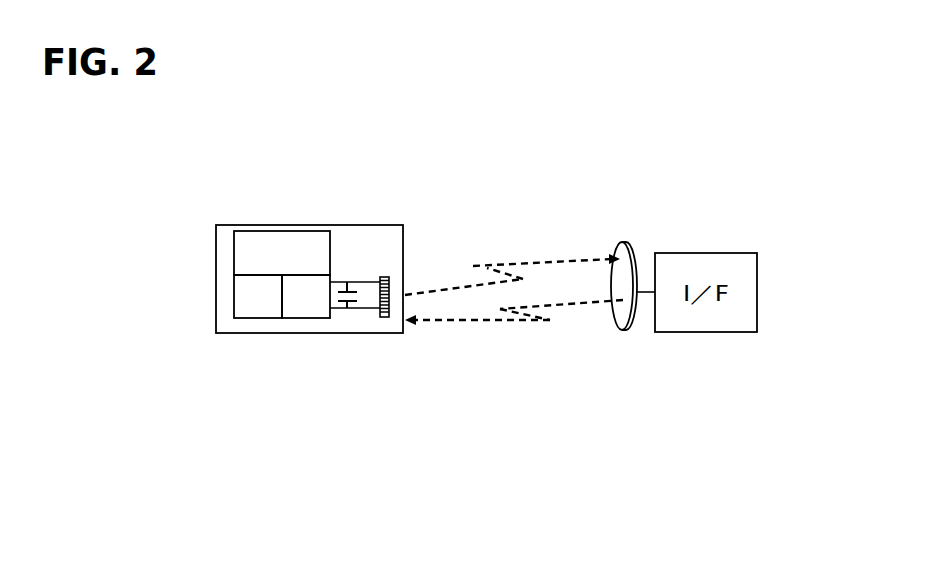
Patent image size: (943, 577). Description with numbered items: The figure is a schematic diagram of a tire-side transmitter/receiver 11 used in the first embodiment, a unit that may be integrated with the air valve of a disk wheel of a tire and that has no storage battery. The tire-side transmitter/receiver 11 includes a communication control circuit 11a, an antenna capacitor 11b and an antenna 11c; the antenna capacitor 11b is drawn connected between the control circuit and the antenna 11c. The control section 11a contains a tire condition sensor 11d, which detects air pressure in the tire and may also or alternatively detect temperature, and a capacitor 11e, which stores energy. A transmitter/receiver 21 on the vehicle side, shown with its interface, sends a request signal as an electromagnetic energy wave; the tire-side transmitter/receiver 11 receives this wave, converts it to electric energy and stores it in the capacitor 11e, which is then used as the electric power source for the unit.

The tire-side transmitter/receiver 11 is at (250, 223).
The communication control circuit 11a is at (284, 232).
The antenna capacitor 11b is at (343, 282).
The antenna 11c is at (389, 314).
The tire condition sensor 11d is at (258, 318).
The capacitor 11e is at (302, 318).
The transmitter/receiver 21 is at (630, 332).